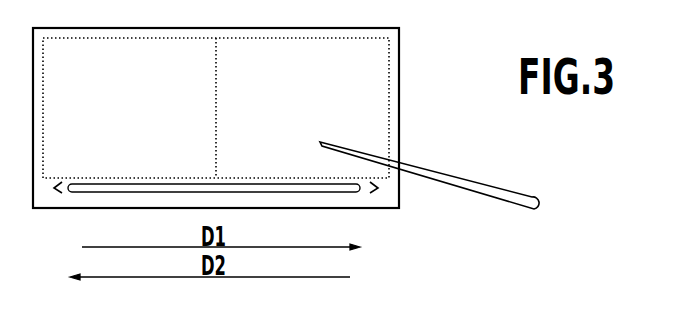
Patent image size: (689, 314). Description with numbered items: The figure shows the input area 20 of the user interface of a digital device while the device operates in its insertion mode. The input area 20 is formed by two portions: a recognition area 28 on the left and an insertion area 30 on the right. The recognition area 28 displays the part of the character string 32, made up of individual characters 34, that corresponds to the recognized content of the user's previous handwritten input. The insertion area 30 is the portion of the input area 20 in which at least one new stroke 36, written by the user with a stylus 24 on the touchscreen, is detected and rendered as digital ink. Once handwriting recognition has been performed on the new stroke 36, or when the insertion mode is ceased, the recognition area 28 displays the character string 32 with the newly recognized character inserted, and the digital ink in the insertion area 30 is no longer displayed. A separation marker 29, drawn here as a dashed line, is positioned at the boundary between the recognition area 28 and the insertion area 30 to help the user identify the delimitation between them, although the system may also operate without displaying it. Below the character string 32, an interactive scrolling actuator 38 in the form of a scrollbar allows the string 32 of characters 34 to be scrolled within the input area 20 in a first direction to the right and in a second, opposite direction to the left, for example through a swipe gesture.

The input area 20 is at (402, 67).
The stylus 24 is at (452, 177).
The recognition area 28 is at (100, 160).
The separation marker 29 is at (218, 62).
The insertion area 30 is at (330, 168).
The character string 32 is at (141, 117).
The characters 34 is at (122, 118).
The stroke 36 is at (268, 120).
The interactive scrolling actuator 38 is at (146, 185).